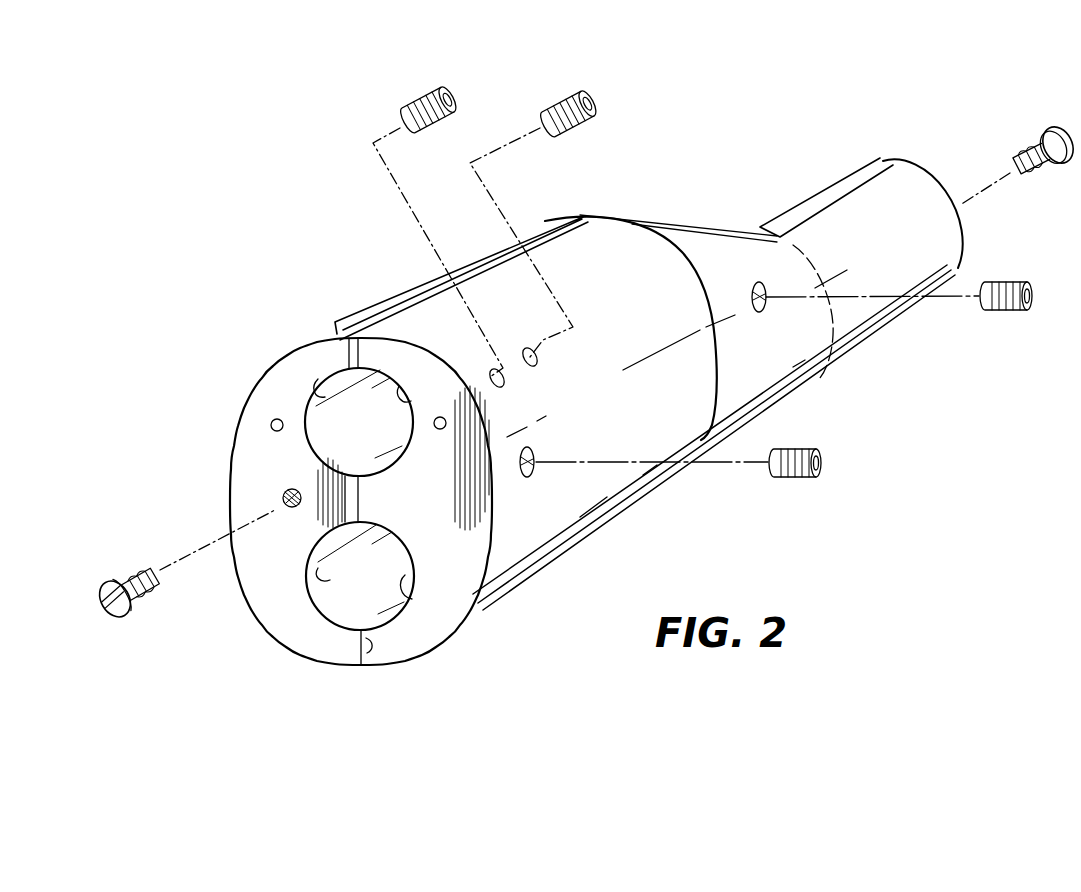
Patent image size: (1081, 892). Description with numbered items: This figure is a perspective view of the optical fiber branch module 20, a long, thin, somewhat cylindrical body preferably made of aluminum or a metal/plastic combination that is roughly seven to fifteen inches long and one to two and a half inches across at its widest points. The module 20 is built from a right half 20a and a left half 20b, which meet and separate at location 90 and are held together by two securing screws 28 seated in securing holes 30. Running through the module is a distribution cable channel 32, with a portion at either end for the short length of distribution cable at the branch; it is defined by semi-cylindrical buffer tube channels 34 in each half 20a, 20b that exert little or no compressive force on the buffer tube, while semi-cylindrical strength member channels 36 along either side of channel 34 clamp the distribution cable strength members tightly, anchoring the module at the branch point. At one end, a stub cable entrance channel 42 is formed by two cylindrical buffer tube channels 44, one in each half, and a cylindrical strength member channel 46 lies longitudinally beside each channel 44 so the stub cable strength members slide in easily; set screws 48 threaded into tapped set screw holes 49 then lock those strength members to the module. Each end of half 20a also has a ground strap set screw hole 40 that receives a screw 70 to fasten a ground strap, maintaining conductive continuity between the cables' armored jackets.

The optical fiber branch module 20 is at (710, 228).
The right half 20a is at (250, 557).
The left half 20b is at (478, 534).
The securing screws 28 is at (1008, 313).
The securing holes 30 is at (762, 313).
The distribution cable channel 32 is at (348, 602).
The buffer tube channels 34 is at (334, 568).
The strength member channels 36 is at (367, 503).
The ground strap set screw hole 40 is at (283, 498).
The stub cable entrance channel 42 is at (308, 436).
The stub cable buffer tube channels 44 is at (324, 390).
The strength member channel 46 is at (271, 425).
The set screws 48 is at (545, 98).
The set screw holes 49 is at (534, 364).
The screw 70 is at (130, 578).
The separation location 90 is at (355, 343).